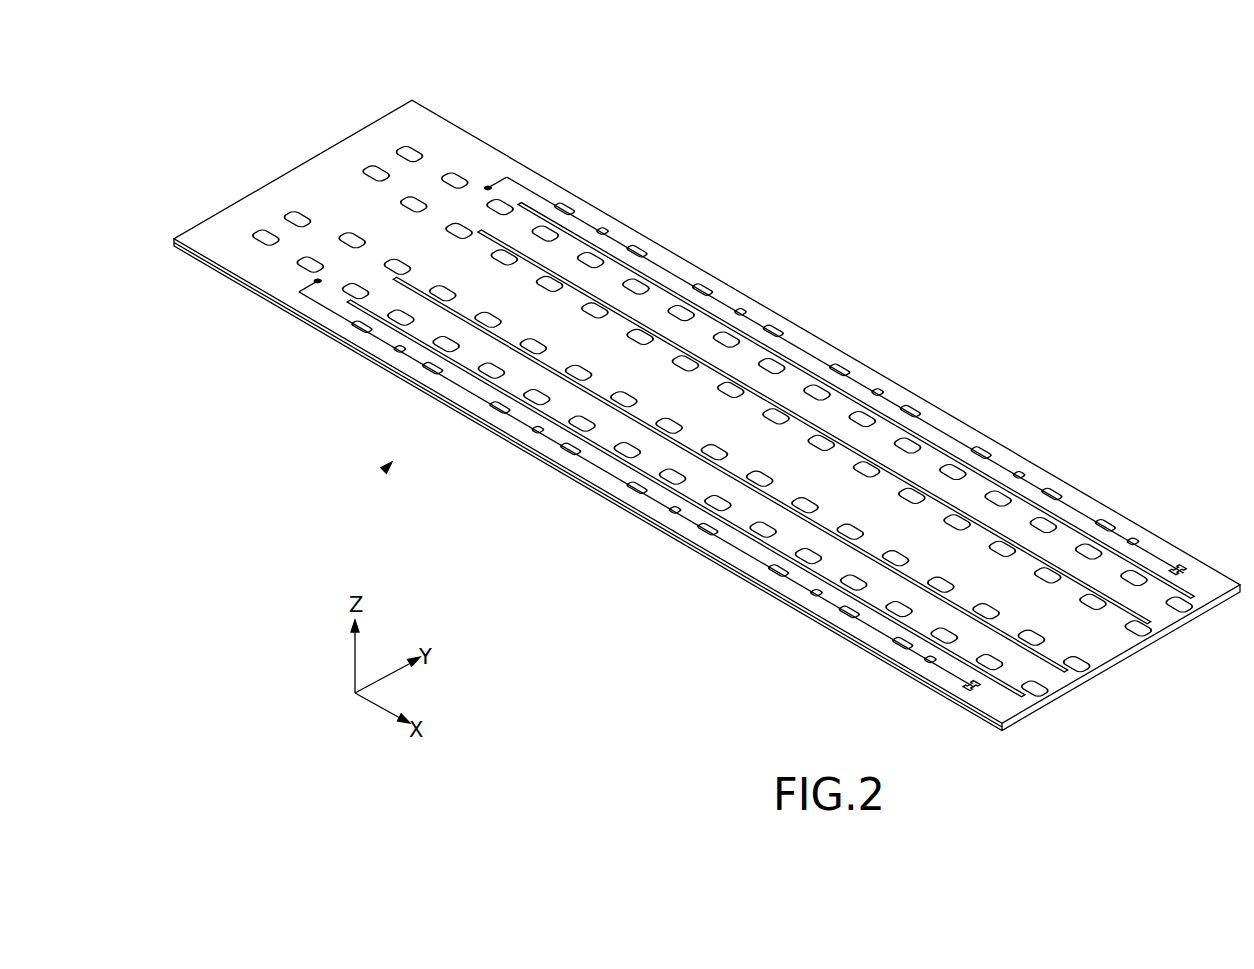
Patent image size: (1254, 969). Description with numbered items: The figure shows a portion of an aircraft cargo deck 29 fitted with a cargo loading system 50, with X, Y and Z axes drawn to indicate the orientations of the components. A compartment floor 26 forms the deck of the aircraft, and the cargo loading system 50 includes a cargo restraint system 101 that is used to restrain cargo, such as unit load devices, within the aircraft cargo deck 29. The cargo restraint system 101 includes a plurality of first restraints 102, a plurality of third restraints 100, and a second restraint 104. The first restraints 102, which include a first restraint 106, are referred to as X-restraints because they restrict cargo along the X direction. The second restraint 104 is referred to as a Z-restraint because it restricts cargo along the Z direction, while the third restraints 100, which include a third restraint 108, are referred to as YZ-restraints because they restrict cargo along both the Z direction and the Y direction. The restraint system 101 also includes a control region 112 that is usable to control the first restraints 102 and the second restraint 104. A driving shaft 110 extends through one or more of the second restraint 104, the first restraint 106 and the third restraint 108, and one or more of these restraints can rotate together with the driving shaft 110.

The cargo loading system 50 is at (205, 133).
The control region 112 is at (511, 160).
The third restraints 100 is at (633, 225).
The first restraints 102 is at (738, 290).
The compartment floor 26 is at (925, 425).
The driving shaft 110 is at (951, 435).
The first restraint 106 is at (1022, 469).
The third restraint 108 is at (1057, 489).
The second restraint 104 is at (1184, 562).
The cargo restraint system 101 is at (405, 370).
The aircraft cargo deck 29 is at (383, 472).